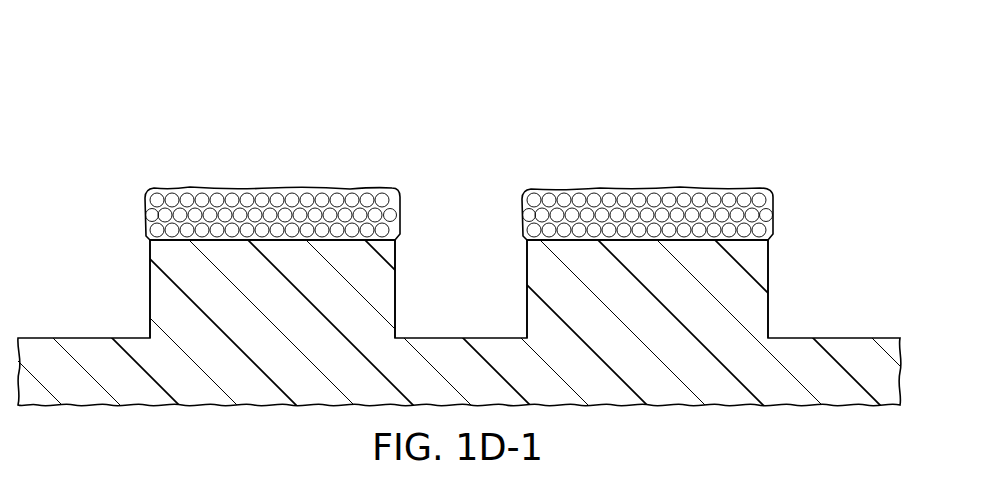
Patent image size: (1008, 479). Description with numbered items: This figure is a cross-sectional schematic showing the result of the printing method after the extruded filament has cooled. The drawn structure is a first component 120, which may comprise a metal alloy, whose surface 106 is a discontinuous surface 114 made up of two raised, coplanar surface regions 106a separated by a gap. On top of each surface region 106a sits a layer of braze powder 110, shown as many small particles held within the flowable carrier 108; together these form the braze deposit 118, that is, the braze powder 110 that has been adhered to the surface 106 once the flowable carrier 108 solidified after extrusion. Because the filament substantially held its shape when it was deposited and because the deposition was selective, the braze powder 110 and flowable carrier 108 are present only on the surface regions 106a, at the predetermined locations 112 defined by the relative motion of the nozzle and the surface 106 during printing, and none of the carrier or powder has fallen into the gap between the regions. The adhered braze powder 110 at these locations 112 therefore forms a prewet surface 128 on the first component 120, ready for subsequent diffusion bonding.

The surface 106 is at (155, 78).
The discontinuous surface 114 is at (155, 78).
The surface regions 106a is at (278, 242).
The flowable carrier 108 is at (375, 196).
The braze powder 110 is at (160, 205).
The predetermined locations 112 is at (237, 160).
The braze deposit 118 is at (309, 175).
The first component 120 is at (200, 403).
The prewet surface 128 is at (790, 110).